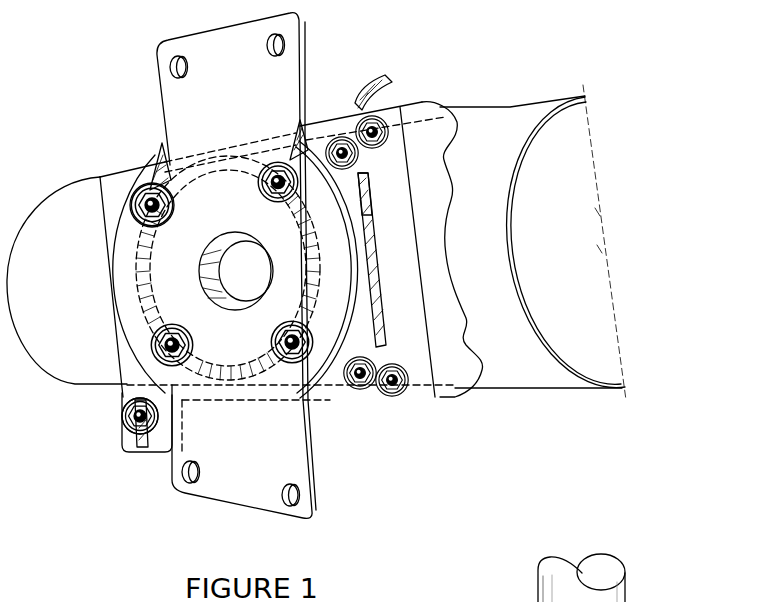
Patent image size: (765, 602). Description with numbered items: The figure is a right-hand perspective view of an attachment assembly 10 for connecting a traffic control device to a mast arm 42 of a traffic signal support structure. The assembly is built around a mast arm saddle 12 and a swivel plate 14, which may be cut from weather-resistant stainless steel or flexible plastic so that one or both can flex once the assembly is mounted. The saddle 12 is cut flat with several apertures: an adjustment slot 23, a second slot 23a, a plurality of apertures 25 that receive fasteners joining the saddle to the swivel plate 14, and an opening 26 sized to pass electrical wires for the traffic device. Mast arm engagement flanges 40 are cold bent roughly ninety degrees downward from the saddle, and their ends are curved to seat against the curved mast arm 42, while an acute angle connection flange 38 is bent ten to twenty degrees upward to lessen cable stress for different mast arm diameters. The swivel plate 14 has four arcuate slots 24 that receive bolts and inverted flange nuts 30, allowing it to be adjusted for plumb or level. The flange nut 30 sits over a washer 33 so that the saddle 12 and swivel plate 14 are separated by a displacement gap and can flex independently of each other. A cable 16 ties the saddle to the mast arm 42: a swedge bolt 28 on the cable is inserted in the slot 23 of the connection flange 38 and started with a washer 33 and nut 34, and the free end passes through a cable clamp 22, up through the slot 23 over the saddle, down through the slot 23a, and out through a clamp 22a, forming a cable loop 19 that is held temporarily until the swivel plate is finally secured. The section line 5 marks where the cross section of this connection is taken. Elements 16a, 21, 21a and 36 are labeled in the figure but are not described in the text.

The cross section line 5 is at (269, 437).
The attachment assembly 10 is at (639, 225).
The mast arm saddle 12 is at (119, 137).
The swivel plate 14 is at (177, 519).
The cable 16 is at (303, 128).
The flange tab 16a is at (380, 93).
The cable loop 19 is at (255, 376).
The clamp plate 21 is at (398, 248).
The vertical mounting plate 21a is at (305, 45).
The cable clamp 22 is at (408, 350).
The clamp 22a is at (356, 157).
The adjustment slot 23 is at (388, 308).
The slot 23a is at (375, 205).
The arcuate slots 24 is at (182, 196).
The fastening apertures 25 is at (300, 495).
The wire access opening 26 is at (208, 263).
The swedge bolt 28 is at (133, 417).
The inverted flange nut 30 is at (312, 330).
The washer 33 is at (168, 208).
The nut 34 is at (390, 130).
The pipe wall 36 is at (510, 601).
The acute angle connection flange 38 is at (124, 450).
The mast arm engagement flange 40 is at (462, 328).
The mast arm 42 is at (535, 332).